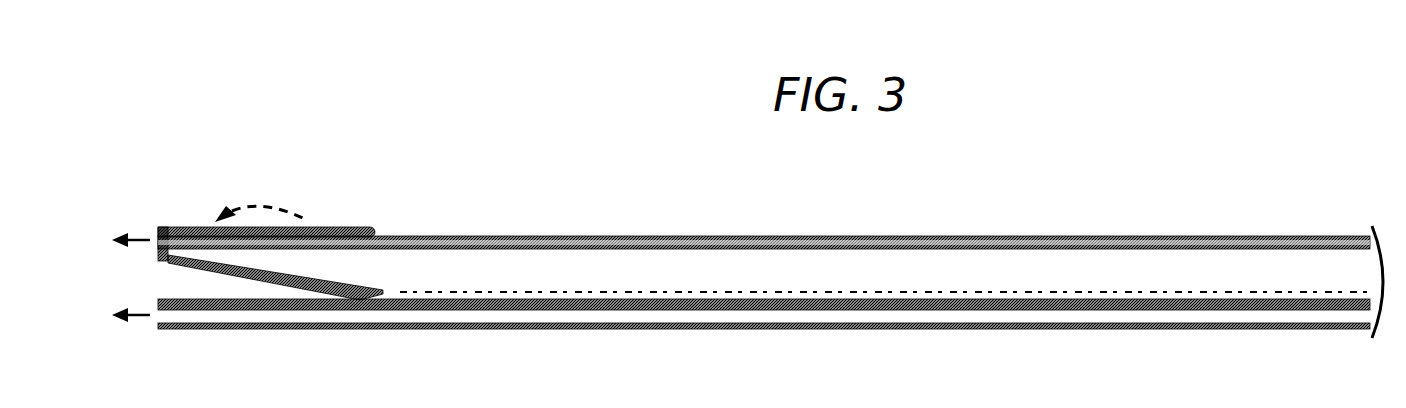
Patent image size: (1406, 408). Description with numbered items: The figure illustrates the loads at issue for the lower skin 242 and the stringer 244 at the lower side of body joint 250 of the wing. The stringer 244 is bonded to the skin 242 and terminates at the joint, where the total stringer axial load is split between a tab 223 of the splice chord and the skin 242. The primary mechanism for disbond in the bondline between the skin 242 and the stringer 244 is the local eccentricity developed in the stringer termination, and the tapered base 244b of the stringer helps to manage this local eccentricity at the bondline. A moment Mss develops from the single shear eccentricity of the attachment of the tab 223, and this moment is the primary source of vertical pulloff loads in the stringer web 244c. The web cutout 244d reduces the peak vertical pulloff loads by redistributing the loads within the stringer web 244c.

The lower side of body joint 250 is at (138, 171).
The tab of the splice chord 223 is at (285, 226).
The stringer 244 is at (764, 216).
The tapered base 244b is at (764, 294).
The stringer web 244c is at (888, 242).
The web cutout 244d is at (303, 274).
The lower skin 242 is at (764, 348).
The moment Mss is at (261, 191).